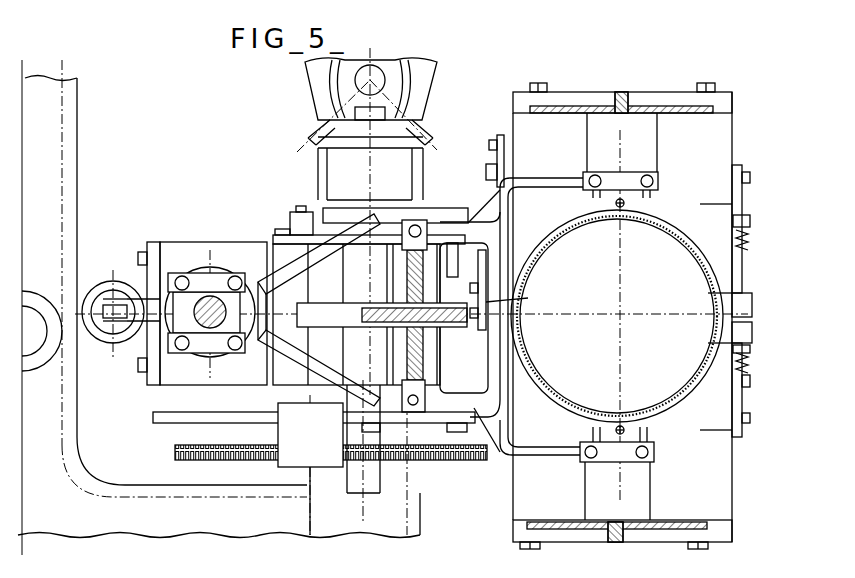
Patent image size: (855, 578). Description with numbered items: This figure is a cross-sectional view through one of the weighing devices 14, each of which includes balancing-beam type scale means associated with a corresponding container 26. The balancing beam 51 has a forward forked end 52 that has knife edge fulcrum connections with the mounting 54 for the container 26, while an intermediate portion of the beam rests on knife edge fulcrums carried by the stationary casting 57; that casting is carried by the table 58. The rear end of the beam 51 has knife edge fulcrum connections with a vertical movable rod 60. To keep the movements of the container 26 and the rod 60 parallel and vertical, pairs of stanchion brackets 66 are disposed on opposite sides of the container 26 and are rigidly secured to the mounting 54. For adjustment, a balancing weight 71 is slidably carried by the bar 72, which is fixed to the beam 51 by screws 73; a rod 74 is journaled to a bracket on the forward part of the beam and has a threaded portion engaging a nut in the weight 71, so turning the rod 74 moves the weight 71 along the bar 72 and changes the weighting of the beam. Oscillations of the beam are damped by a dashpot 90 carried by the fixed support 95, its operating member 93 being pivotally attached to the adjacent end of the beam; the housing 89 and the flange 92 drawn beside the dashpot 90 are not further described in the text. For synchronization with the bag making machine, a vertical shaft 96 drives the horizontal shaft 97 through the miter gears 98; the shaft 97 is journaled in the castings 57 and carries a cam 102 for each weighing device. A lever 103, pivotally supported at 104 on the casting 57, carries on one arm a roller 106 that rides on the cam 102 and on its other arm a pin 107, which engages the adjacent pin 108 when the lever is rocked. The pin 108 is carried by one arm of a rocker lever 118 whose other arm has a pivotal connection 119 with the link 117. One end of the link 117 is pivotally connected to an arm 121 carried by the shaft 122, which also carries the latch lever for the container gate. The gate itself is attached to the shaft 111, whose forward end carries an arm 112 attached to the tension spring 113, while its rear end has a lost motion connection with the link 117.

The weighing device 14 is at (270, 226).
The container 26 is at (713, 283).
The balancing beam 51 is at (528, 456).
The forked end 52 is at (658, 181).
The mounting 54 is at (658, 230).
The stationary casting 57 is at (436, 367).
The table 58 is at (77, 158).
The vertical movable rod 60 is at (226, 312).
The stanchion brackets 66 is at (660, 106).
The balancing weight 71 is at (323, 458).
The bar 72 is at (208, 416).
The screws 73 is at (380, 430).
The rod 74 is at (251, 446).
The gear housing 89 is at (197, 243).
The dashpot 90 is at (106, 294).
The flange 92 is at (222, 273).
The operating member 93 is at (110, 322).
The fixed support 95 is at (153, 243).
The vertical shaft 96 is at (386, 80).
The horizontal shaft 97 is at (402, 108).
The miter gears 98 is at (318, 102).
The cam 102 is at (322, 208).
The lever 103 is at (285, 241).
The pivot 104 is at (275, 232).
The roller 106 is at (300, 212).
The pin 107 is at (470, 288).
The pin 108 is at (468, 268).
The shaft 111 is at (750, 420).
The arm 112 is at (742, 398).
The tension spring 113 is at (748, 237).
The link 117 is at (504, 146).
The rocker lever 118 is at (478, 318).
The pivotal connection 119 is at (470, 304).
The arm 121 is at (493, 154).
The shaft 122 is at (750, 177).